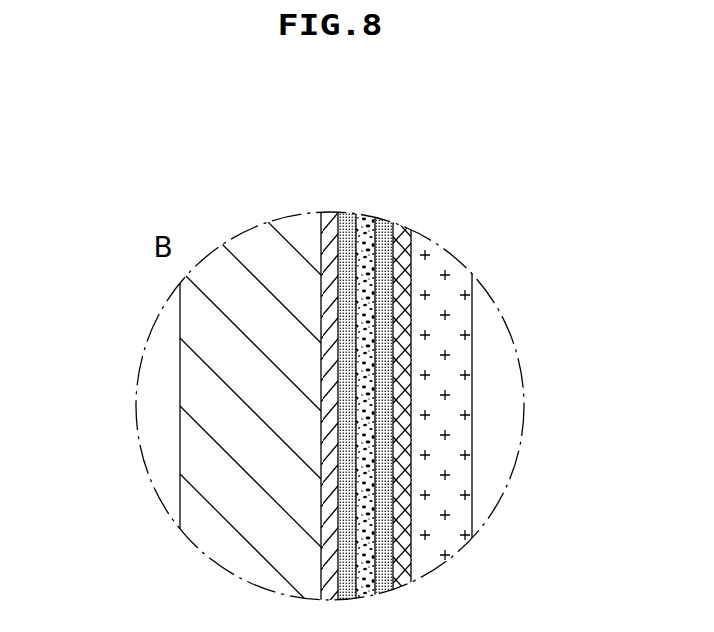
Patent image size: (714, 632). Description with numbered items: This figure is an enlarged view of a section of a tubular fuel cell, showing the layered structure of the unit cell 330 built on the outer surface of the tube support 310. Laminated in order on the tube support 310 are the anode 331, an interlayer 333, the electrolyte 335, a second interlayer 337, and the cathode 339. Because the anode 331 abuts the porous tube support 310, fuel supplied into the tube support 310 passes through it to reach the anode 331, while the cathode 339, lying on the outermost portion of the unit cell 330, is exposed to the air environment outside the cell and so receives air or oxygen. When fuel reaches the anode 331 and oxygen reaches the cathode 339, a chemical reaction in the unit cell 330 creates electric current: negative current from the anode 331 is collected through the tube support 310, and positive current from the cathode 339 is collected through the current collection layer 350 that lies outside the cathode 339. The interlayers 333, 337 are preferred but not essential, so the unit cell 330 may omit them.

The tube support 310 is at (228, 432).
The unit cell 330 is at (508, 138).
The anode 331 is at (329, 213).
The interlayer 333 is at (350, 217).
The electrolyte 335 is at (367, 216).
The interlayer 337 is at (388, 225).
The cathode 339 is at (403, 233).
The current collection layer 350 is at (448, 407).